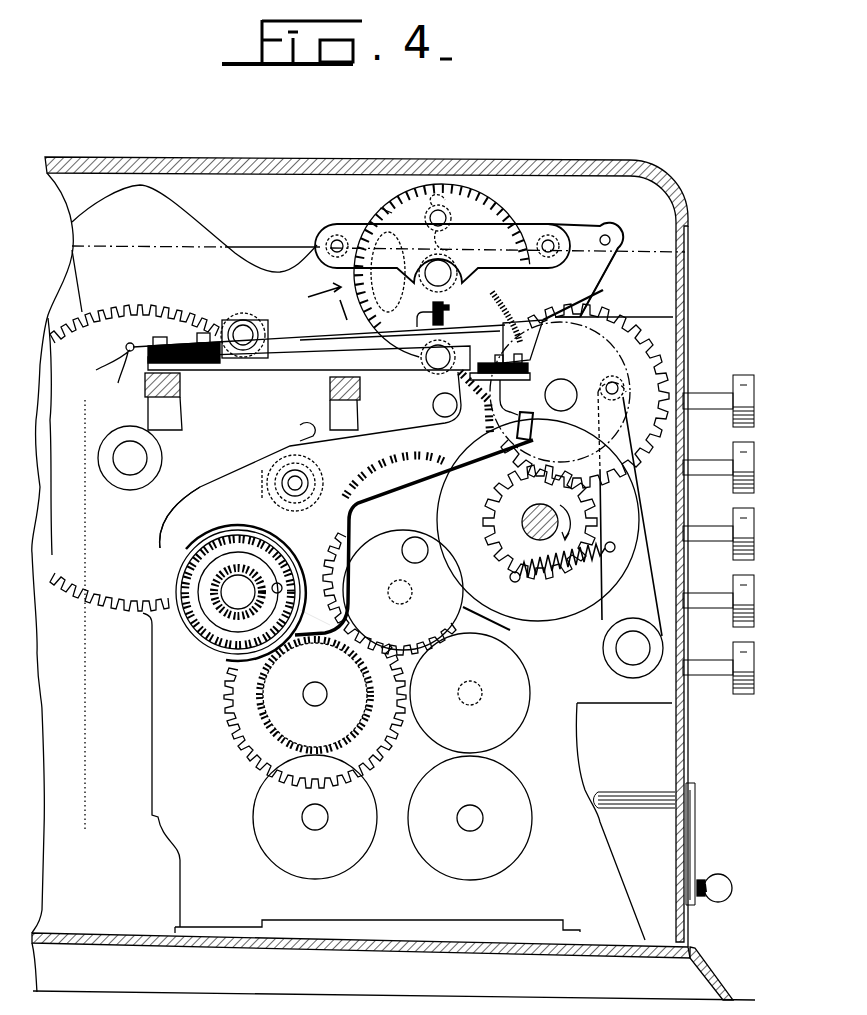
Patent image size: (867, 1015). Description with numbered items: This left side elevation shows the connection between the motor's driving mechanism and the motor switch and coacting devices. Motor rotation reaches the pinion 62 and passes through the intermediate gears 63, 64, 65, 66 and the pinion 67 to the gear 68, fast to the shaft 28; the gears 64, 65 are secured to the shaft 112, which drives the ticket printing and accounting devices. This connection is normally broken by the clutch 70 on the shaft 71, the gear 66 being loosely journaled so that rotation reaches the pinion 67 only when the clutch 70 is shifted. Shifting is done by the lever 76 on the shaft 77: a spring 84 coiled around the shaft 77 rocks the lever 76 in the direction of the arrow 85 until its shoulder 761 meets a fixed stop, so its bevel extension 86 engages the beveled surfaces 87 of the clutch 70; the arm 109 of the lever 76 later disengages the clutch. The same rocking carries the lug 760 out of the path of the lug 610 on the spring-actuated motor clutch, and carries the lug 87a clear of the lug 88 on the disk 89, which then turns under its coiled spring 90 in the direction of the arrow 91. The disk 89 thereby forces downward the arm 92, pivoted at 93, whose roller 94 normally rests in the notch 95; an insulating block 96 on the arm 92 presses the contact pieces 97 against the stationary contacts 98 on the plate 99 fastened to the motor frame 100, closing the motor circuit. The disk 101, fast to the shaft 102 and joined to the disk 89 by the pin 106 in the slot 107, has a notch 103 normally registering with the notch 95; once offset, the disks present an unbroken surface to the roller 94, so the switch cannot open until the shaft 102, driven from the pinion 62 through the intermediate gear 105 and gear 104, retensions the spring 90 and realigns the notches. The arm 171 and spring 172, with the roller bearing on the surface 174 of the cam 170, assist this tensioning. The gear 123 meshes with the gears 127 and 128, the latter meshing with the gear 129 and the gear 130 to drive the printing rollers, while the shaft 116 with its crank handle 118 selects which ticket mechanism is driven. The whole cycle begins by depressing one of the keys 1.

The keys 1 is at (733, 420).
The shaft 28 is at (126, 472).
The pinion 62 is at (580, 532).
The intermediate gear 63 is at (502, 625).
The intermediate gear 64 is at (380, 727).
The intermediate gear 65 is at (260, 733).
The gear 66 is at (213, 652).
The pinion 67 is at (218, 612).
The gear 68 is at (97, 592).
The clutch 70 is at (195, 616).
The shaft 71 is at (233, 583).
The lever 76 is at (240, 482).
The shaft 77 is at (288, 491).
The spring 84 is at (293, 428).
The arrow 85 is at (346, 479).
The bevel extension 86 is at (352, 584).
The beveled surfaces 87 is at (252, 695).
The lug 87a is at (573, 296).
The lug 88 is at (508, 240).
The disk 89 is at (563, 243).
The coiled spring 90 is at (446, 230).
The arrow 91 is at (316, 301).
The arm 92 is at (313, 335).
The pivot 93 is at (243, 325).
The roller 94 is at (433, 370).
The notch 95 is at (414, 529).
The block of insulating material 96 is at (444, 320).
The contact pieces 97 is at (525, 328).
The stationary contacts 98 is at (528, 368).
The plate 99 is at (290, 372).
The motor frame 100 is at (170, 418).
The disk 101 is at (380, 208).
The shaft 102 is at (446, 270).
The notch 103 is at (498, 318).
The gear 104 is at (352, 219).
The intermediate gear 105 is at (579, 396).
The pin 106 is at (346, 272).
The slot 107 is at (405, 200).
The arm 109 is at (168, 543).
The shaft 112 is at (315, 695).
The shaft 116 is at (627, 798).
The crank handle 118 is at (711, 881).
The gear 123 is at (623, 390).
The gear 127 is at (261, 852).
The gear 128 is at (406, 533).
The gear 129 is at (529, 686).
The gear 130 is at (529, 832).
The cam 170 is at (604, 323).
The arm 171 is at (636, 482).
The spring 172 is at (563, 574).
The surface 174 is at (618, 368).
The lug 610 is at (484, 494).
The lug 760 is at (532, 430).
The shoulder 761 is at (597, 306).